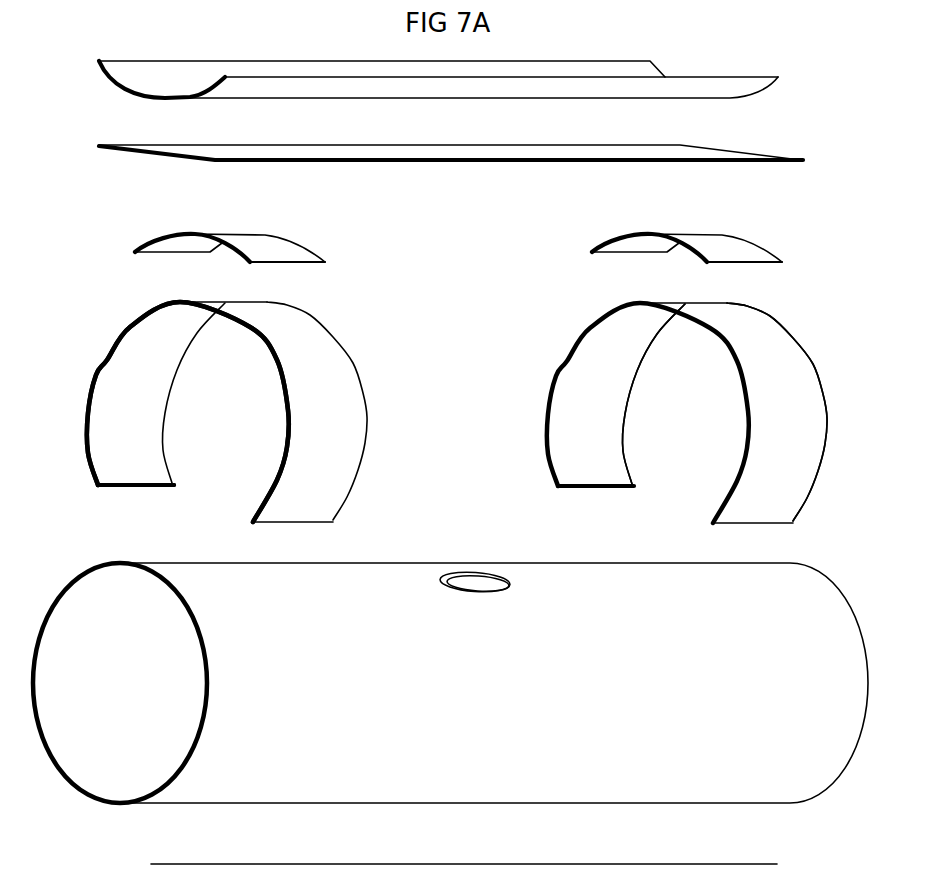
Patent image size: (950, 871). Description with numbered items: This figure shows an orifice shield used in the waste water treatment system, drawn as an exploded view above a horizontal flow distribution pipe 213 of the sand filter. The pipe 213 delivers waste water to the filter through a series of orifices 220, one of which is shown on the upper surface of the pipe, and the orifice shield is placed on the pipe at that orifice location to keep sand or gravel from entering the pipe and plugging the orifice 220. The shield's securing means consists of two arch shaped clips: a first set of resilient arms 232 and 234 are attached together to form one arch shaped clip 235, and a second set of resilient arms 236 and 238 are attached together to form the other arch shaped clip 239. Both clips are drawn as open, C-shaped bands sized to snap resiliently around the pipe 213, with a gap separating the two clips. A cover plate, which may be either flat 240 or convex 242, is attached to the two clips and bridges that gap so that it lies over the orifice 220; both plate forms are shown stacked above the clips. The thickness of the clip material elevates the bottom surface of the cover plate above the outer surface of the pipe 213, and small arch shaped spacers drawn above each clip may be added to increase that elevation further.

The flow distribution pipe 213 is at (450, 708).
The orifice 220 is at (517, 591).
The resilient arm 232 is at (780, 397).
The resilient arm 234 is at (589, 440).
The arch shaped clip 235 is at (774, 311).
The resilient arm 236 is at (358, 362).
The resilient arm 238 is at (86, 462).
The arch shaped clip 239 is at (168, 299).
The flat cover plate 240 is at (740, 150).
The convex cover plate 242 is at (702, 71).